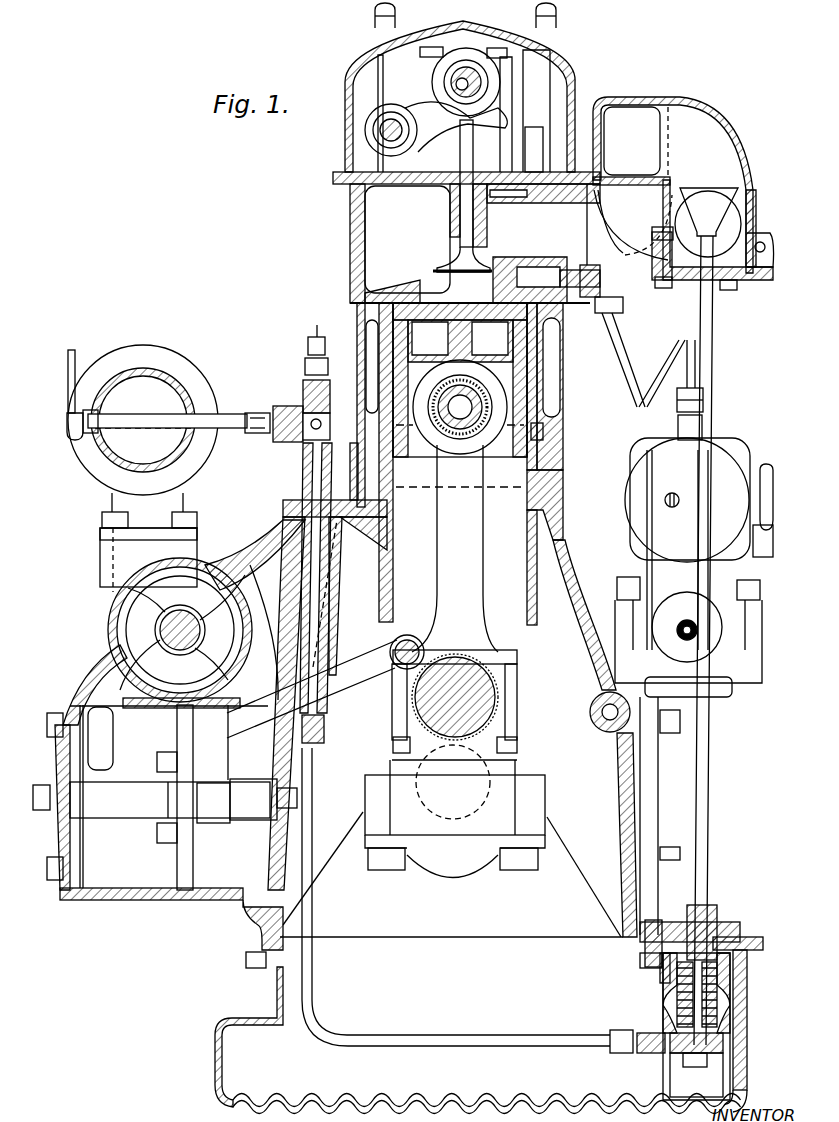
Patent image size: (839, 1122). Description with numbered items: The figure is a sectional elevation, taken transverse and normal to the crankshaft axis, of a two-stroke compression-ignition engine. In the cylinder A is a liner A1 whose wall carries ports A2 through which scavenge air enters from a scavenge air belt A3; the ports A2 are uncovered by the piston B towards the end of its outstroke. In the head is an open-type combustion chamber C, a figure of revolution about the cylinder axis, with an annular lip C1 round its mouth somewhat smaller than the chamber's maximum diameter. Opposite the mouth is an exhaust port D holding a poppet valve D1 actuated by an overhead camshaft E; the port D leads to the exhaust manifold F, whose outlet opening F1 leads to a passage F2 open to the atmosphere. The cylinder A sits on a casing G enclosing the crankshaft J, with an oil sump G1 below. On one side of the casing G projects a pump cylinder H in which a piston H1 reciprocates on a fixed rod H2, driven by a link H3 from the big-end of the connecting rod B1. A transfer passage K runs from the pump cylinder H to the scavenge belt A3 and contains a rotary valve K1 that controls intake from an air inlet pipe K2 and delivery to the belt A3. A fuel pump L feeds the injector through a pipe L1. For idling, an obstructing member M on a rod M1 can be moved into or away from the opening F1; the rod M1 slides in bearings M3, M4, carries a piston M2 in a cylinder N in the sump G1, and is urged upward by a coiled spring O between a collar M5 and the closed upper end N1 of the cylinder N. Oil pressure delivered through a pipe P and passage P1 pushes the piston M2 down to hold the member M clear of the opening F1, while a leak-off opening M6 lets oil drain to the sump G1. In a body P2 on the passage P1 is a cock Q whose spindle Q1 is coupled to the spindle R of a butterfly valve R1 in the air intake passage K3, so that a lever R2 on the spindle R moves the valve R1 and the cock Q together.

The cylinder A is at (350, 320).
The liner A1 is at (350, 342).
The ports A2 is at (537, 440).
The scavenge air belt A3 is at (535, 485).
The piston B is at (373, 297).
The connecting rod B1 is at (463, 553).
The combustion chamber C is at (443, 287).
The annular lip C1 is at (503, 260).
The exhaust port D is at (440, 257).
The poppet valve D1 is at (460, 243).
The overhead camshaft E is at (478, 82).
The exhaust manifold F is at (634, 125).
The opening F1 is at (725, 213).
The passage F2 is at (730, 243).
The casing G is at (572, 580).
The oil sump G1 is at (512, 1073).
The pump cylinder H is at (150, 897).
The piston H1 is at (187, 867).
The rod H2 is at (127, 800).
The link H3 is at (357, 683).
The crankshaft J is at (475, 770).
The transfer passage K is at (273, 622).
The rotary valve K1 is at (115, 650).
The air inlet pipe K2 is at (130, 560).
The air intake passage K3 is at (120, 463).
The fuel pump L is at (677, 463).
The pipe L1 is at (627, 365).
The obstructing member M is at (742, 182).
The rod M1 is at (700, 728).
The piston M2 is at (680, 1065).
The bearing M3 is at (668, 283).
The bearing M4 is at (708, 920).
The collar M5 is at (727, 935).
The leak-off opening M6 is at (660, 1040).
The cylinder N is at (683, 1082).
The upper closed end N1 is at (675, 1017).
The coiled spring O is at (668, 983).
The pipe P is at (450, 1040).
The passage P1 is at (315, 525).
The body P2 is at (305, 408).
The cock Q is at (283, 410).
The spindle Q1 is at (267, 427).
The spindle R is at (225, 423).
The butterfly valve R1 is at (150, 397).
The lever R2 is at (75, 350).